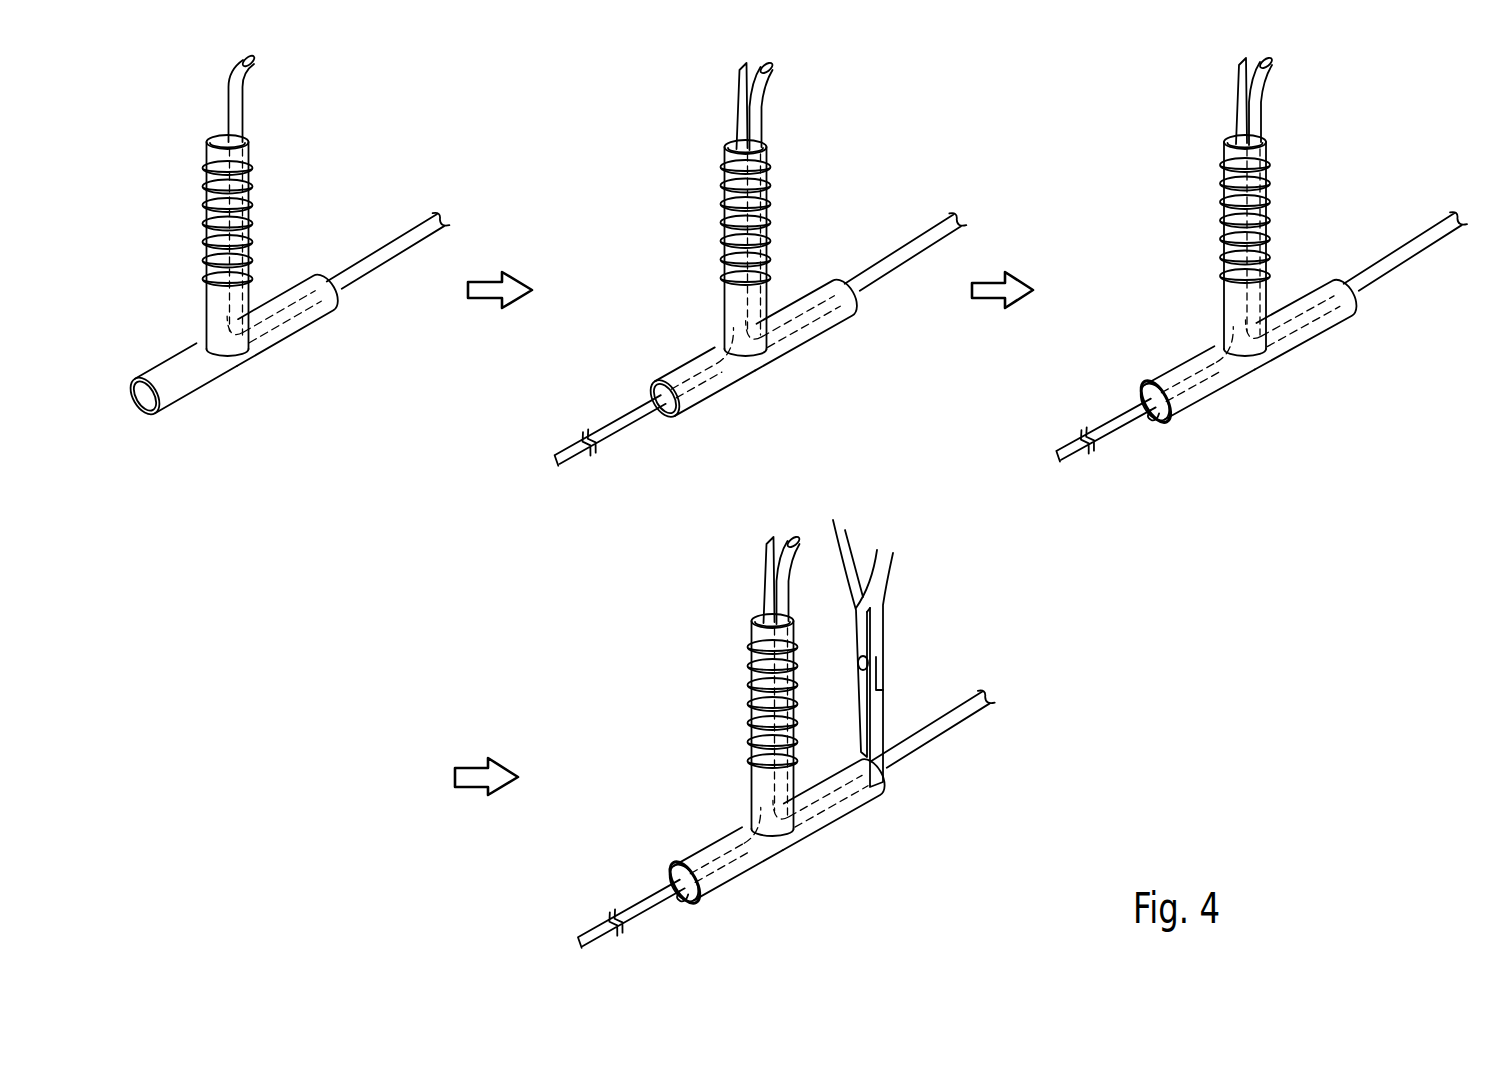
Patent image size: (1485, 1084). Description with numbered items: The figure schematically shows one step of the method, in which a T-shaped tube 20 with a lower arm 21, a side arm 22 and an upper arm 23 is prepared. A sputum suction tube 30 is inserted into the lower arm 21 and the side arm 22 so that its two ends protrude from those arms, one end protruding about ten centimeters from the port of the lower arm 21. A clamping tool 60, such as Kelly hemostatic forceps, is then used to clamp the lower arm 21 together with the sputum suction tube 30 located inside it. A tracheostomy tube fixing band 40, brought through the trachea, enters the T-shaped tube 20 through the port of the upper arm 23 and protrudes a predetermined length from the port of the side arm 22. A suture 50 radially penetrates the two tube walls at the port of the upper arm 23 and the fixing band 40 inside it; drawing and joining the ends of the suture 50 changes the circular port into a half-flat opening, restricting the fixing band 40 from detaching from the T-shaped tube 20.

The T-shaped tube 20 is at (254, 386).
The lower arm 21 is at (277, 290).
The side arm 22 is at (209, 164).
The upper arm 23 is at (165, 365).
The sputum suction tube 30 is at (240, 96).
The tracheostomy tube fixing band 40 is at (611, 428).
The suture 50 is at (1136, 419).
The clamping tool 60 is at (883, 625).